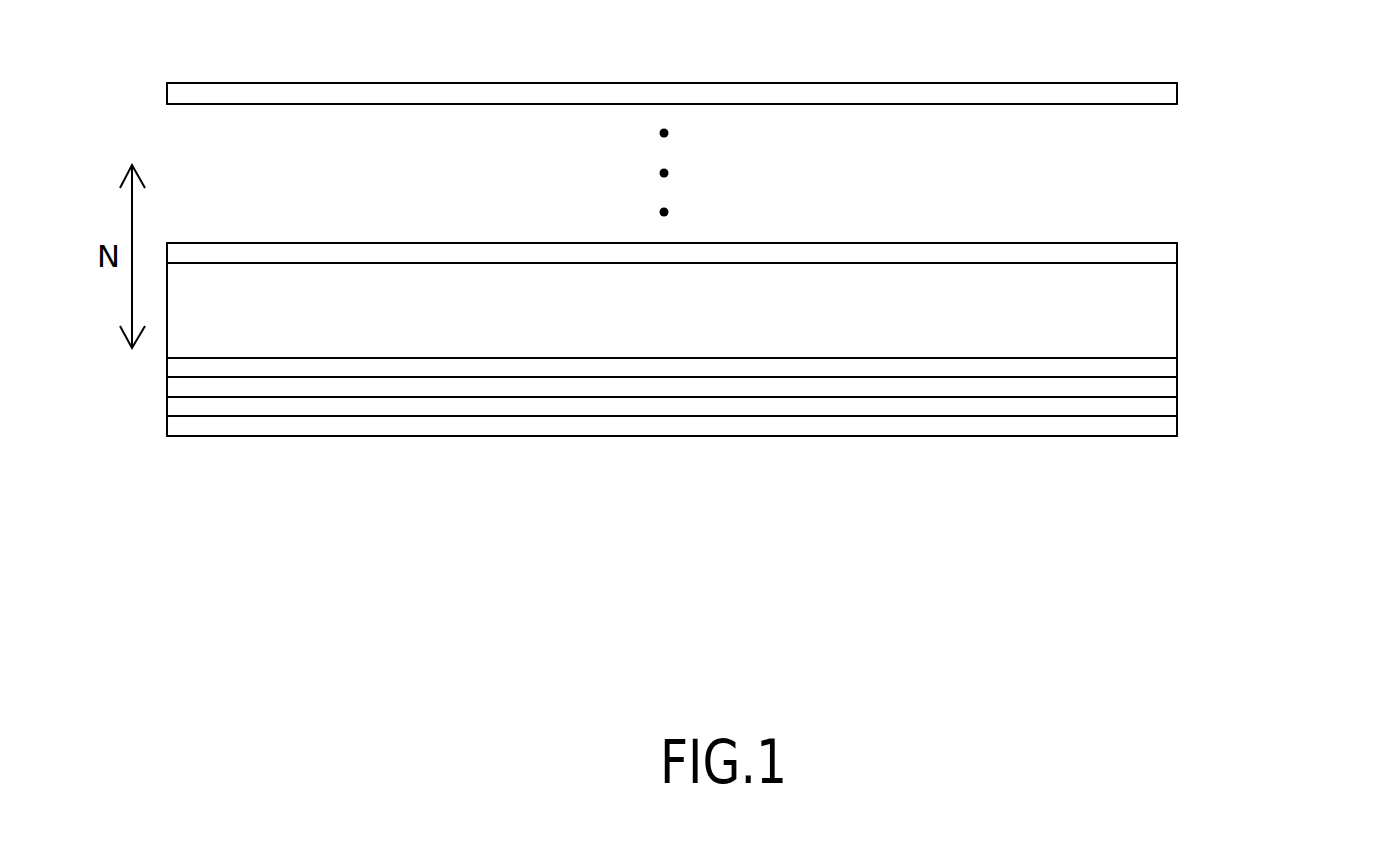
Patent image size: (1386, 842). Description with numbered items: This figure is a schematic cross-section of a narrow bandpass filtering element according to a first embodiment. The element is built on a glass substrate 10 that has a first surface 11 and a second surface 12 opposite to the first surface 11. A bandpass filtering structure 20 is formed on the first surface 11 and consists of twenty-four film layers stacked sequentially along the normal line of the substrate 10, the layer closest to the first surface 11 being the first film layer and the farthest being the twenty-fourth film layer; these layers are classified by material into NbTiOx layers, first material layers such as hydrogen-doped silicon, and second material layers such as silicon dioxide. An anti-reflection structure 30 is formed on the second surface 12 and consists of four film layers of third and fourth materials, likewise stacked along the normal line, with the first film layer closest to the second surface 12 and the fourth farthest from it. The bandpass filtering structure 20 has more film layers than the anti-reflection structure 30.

The substrate 10 is at (743, 310).
The first surface 11 is at (1147, 264).
The second surface 12 is at (711, 337).
The bandpass filtering structure 20 is at (768, 150).
The anti-reflection structure 30 is at (678, 464).